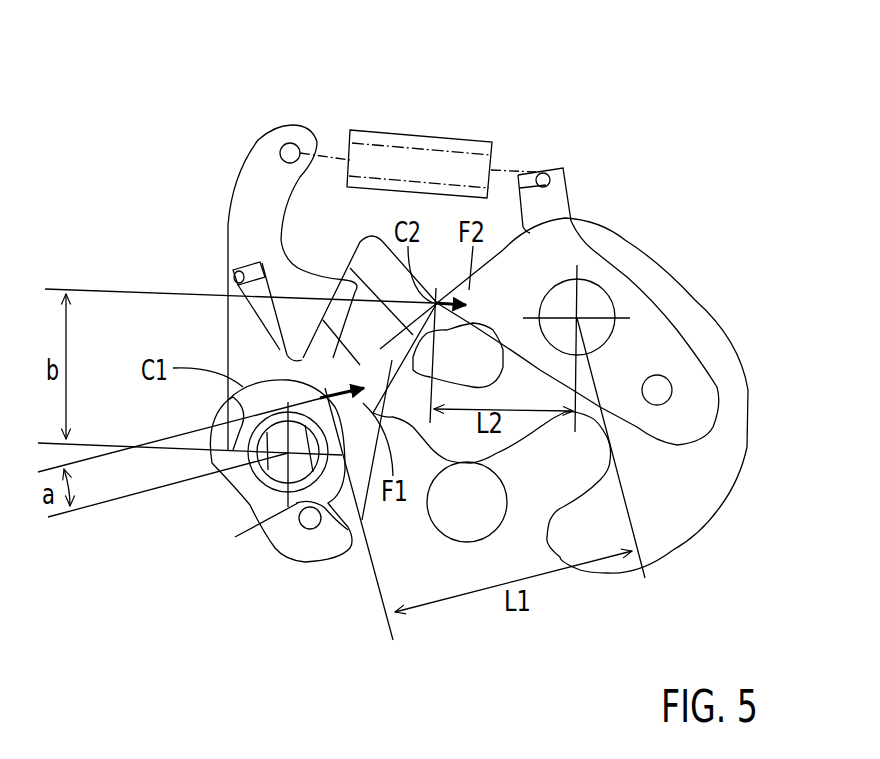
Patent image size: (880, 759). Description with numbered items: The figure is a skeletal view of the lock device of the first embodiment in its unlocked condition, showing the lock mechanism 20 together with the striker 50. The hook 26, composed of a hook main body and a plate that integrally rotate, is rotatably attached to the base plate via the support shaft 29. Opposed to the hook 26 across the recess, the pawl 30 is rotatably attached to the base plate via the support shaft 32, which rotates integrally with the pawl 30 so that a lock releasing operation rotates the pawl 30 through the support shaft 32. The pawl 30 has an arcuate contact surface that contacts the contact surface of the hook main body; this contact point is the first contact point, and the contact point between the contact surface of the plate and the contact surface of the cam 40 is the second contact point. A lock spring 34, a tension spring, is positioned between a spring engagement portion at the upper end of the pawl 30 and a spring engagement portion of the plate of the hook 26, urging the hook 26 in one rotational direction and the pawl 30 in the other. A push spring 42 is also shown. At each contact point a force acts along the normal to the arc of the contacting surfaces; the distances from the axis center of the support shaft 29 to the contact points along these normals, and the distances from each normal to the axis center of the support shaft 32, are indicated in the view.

The lock mechanism 20 is at (594, 190).
The hook 26 is at (715, 343).
The support shaft 29 is at (593, 297).
The pawl 30 is at (238, 235).
The support shaft 32 is at (297, 467).
The lock spring 34 is at (393, 137).
The cam 40 is at (362, 263).
The push spring 42 is at (220, 487).
The striker 50 is at (448, 517).